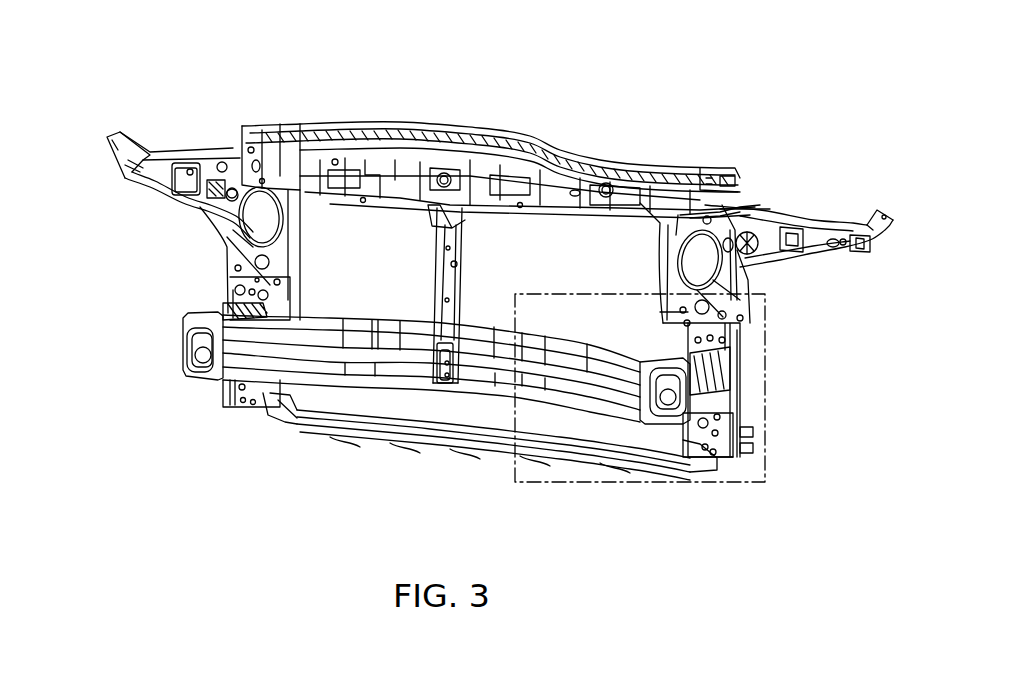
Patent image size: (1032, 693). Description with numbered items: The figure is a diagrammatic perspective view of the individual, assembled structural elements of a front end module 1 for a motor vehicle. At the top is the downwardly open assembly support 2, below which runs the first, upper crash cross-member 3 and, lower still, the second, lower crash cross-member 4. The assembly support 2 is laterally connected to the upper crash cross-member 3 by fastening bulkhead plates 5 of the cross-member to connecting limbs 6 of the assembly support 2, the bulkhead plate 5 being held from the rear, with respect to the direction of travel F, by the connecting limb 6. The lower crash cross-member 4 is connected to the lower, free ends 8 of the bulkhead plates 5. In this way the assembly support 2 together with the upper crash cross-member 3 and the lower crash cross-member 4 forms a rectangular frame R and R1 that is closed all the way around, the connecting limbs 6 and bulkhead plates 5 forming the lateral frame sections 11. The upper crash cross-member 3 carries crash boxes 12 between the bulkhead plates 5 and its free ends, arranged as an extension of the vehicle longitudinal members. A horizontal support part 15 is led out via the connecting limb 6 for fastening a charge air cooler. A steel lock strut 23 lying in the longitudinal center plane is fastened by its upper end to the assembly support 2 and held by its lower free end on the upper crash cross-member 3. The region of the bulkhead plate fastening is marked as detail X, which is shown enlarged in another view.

The front end module 1 is at (638, 110).
The assembly support 2 is at (484, 140).
The upper crash cross-member 3 is at (331, 336).
The lower crash cross-member 4 is at (410, 427).
The bulkhead plate 5 is at (236, 296).
The connecting limb 6 is at (242, 246).
The lower free end 8 is at (213, 422).
The lateral frame section 11 is at (744, 358).
The crash box 12 is at (709, 384).
The horizontal support part 15 is at (785, 232).
The lock strut 23 is at (452, 263).
The rectangular frame R is at (557, 281).
The rectangular frame R1 is at (476, 416).
The detail X is at (671, 486).
The direction of travel F is at (285, 592).